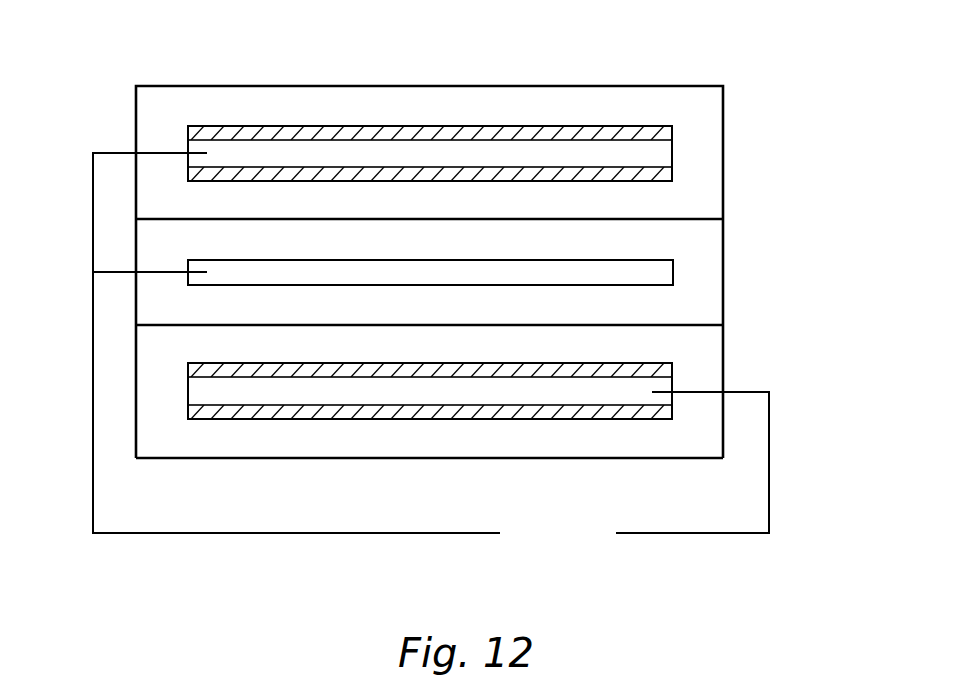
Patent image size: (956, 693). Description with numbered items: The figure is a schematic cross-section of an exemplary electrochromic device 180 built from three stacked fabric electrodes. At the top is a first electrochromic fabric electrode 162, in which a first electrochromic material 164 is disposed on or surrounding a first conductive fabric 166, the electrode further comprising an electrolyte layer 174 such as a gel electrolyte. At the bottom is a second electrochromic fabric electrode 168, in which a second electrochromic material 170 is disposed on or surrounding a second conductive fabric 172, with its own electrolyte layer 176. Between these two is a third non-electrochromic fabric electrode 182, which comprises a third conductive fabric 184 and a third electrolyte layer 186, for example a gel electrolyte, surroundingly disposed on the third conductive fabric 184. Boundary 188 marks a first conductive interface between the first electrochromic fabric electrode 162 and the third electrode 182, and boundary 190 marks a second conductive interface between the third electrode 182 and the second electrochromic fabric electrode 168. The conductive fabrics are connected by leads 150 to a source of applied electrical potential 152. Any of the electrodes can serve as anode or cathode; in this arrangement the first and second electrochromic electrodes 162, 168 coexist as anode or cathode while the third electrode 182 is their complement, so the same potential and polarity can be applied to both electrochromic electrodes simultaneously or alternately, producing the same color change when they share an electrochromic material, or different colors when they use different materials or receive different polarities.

The electrochromic device 180 is at (312, 60).
The electrolyte layer 174 is at (162, 117).
The electrolyte layer 176 is at (402, 442).
The first electrochromic fabric electrode 162 is at (787, 87).
The first conductive fabric 166 is at (350, 153).
The first electrochromic material 164 is at (518, 127).
The boundary 188 is at (332, 218).
The third non-electrochromic fabric electrode 182 is at (787, 225).
The third electrolyte layer 186 is at (675, 306).
The third conductive fabric 184 is at (358, 272).
The boundary 190 is at (403, 325).
The second electrochromic fabric electrode 168 is at (787, 330).
The second conductive fabric 172 is at (350, 392).
The second electrochromic material 170 is at (515, 365).
The electrical lead 150 is at (92, 388).
The potential source 152 is at (542, 549).